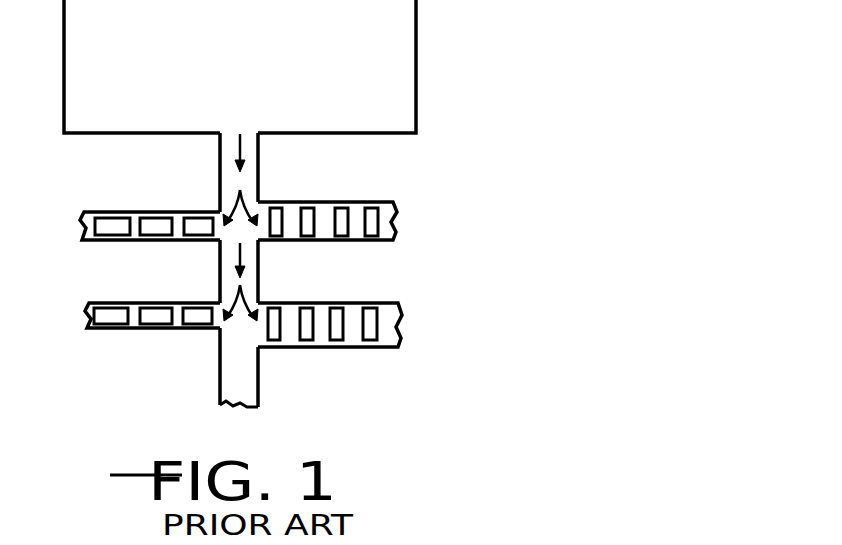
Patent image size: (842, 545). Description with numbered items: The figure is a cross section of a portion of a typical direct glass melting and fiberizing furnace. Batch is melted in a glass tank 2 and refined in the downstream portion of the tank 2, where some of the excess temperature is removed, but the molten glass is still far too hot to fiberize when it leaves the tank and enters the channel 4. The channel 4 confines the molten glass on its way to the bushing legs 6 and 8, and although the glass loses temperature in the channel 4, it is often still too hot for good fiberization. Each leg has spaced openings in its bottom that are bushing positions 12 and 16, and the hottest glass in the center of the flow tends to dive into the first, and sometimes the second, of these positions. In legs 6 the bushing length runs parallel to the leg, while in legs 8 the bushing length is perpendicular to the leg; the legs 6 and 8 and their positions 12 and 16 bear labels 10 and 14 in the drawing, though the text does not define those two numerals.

The glass tank 2 is at (390, 21).
The channel 4 is at (250, 178).
The bushing legs 6 is at (122, 274).
The bushing legs 8 is at (363, 266).
The tape strip 10 is at (108, 221).
The bushing positions 12 is at (200, 221).
The tape strip 14 is at (352, 203).
The bushing positions 16 is at (288, 202).